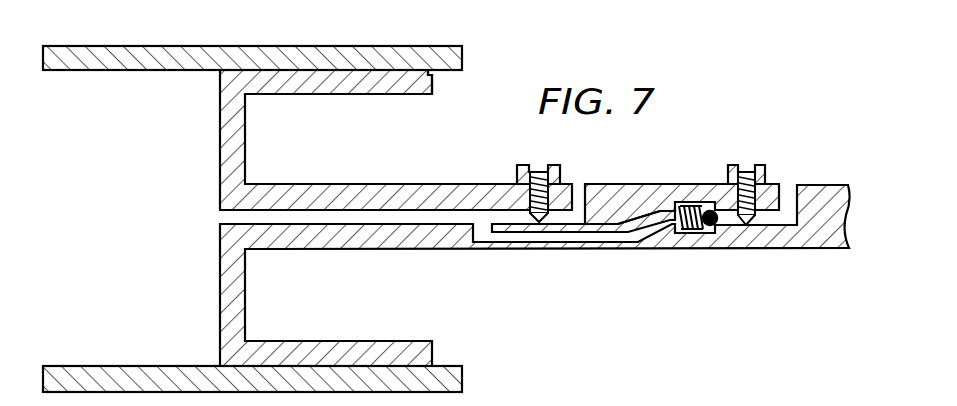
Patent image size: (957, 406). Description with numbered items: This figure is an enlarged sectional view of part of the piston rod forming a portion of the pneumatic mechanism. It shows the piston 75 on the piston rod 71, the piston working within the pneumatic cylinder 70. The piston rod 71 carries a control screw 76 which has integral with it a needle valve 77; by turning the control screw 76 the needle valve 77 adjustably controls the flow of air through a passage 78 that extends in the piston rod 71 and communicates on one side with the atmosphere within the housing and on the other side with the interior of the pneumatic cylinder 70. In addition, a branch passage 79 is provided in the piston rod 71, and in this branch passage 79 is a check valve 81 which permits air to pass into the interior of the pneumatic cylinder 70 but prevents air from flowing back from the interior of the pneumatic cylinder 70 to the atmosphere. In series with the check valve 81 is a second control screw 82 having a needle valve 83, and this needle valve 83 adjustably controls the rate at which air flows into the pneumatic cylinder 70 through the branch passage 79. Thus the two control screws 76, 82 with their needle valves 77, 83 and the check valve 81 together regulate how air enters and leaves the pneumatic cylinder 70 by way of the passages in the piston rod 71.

The pneumatic cylinder 70 is at (280, 47).
The piston rod 71 is at (341, 197).
The piston 75 is at (423, 75).
The control screw 76 is at (556, 184).
The needle valve 77 is at (520, 210).
The passage 78 is at (286, 214).
The branch passage 79 is at (602, 243).
The check valve 81 is at (702, 236).
The control screw 82 is at (758, 190).
The needle valve 83 is at (757, 228).